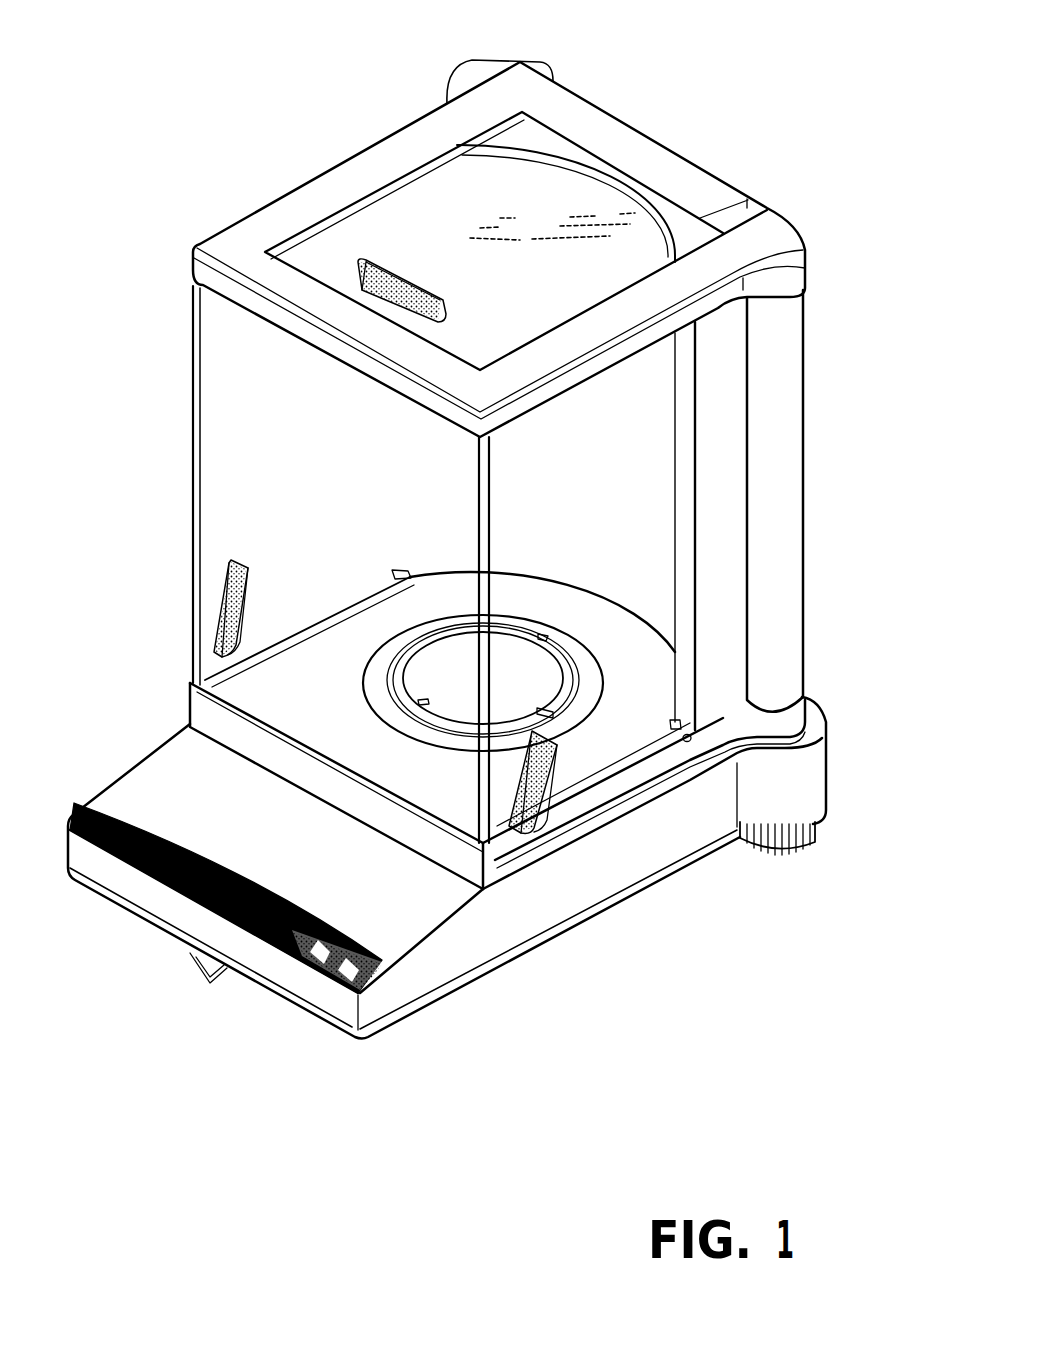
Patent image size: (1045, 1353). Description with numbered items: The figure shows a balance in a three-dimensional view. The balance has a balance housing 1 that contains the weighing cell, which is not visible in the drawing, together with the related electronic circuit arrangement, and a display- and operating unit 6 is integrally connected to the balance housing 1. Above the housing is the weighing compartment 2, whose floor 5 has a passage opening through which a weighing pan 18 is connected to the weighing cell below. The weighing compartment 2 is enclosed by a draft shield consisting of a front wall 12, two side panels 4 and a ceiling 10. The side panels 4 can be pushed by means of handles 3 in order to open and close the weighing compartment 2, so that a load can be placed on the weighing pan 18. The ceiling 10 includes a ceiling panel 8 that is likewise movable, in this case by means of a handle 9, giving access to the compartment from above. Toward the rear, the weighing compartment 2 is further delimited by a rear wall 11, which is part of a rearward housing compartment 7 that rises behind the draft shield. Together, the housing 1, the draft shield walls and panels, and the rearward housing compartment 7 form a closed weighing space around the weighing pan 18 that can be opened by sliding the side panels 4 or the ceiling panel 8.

The balance housing 1 is at (653, 845).
The weighing compartment 2 is at (158, 466).
The handles 3 is at (227, 583).
The side panels 4 is at (653, 400).
The floor 5 is at (623, 737).
The display- and operating unit 6 is at (395, 923).
The rearward housing compartment 7 is at (775, 402).
The ceiling panel 8 is at (443, 200).
The handle 9 is at (370, 280).
The ceiling 10 is at (257, 223).
The rear wall 11 is at (583, 203).
The front wall 12 is at (222, 327).
The weighing pan 18 is at (443, 670).